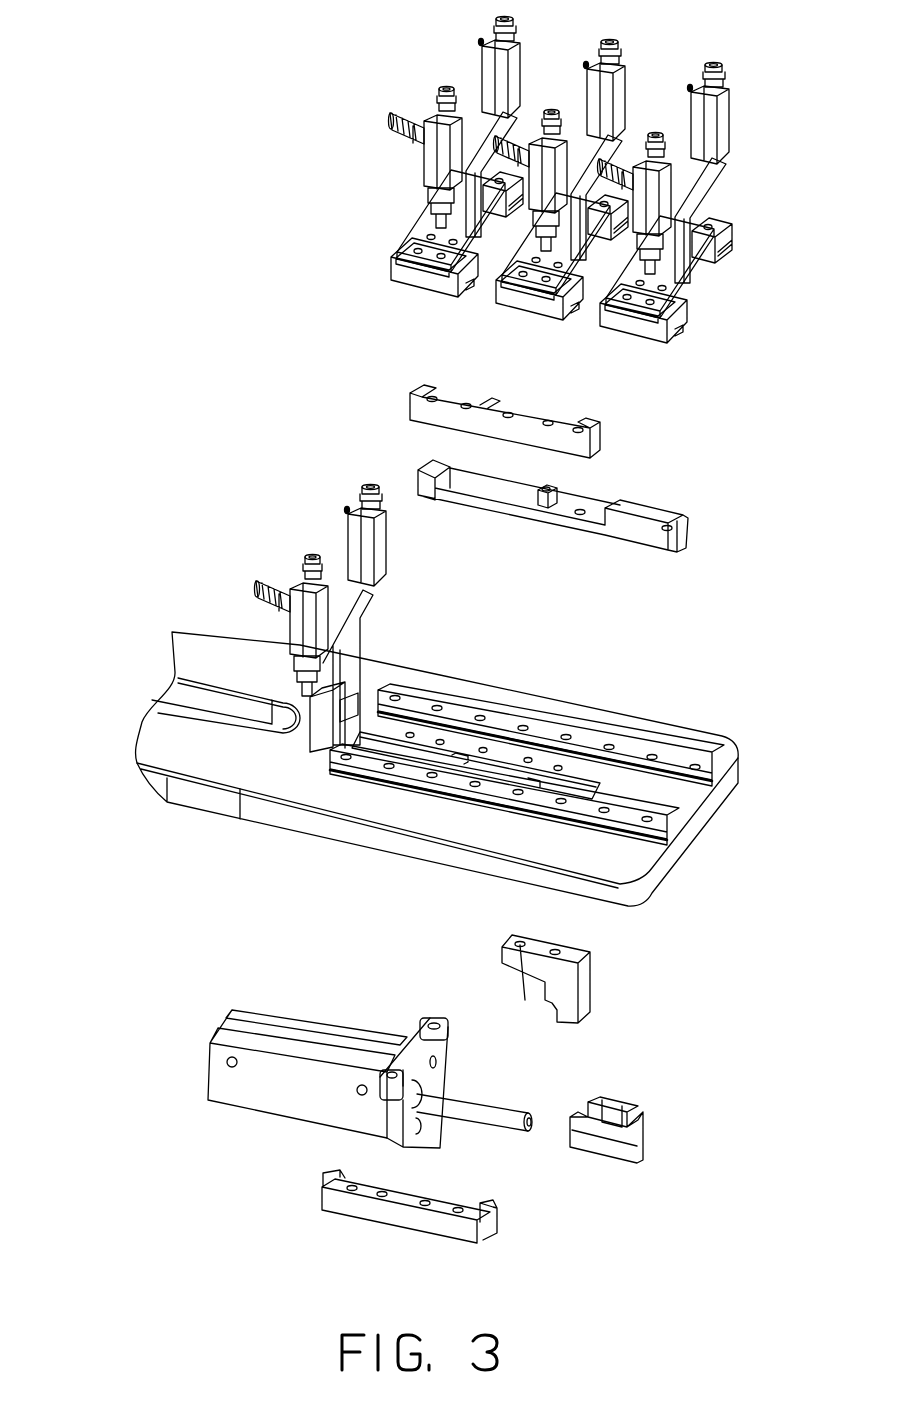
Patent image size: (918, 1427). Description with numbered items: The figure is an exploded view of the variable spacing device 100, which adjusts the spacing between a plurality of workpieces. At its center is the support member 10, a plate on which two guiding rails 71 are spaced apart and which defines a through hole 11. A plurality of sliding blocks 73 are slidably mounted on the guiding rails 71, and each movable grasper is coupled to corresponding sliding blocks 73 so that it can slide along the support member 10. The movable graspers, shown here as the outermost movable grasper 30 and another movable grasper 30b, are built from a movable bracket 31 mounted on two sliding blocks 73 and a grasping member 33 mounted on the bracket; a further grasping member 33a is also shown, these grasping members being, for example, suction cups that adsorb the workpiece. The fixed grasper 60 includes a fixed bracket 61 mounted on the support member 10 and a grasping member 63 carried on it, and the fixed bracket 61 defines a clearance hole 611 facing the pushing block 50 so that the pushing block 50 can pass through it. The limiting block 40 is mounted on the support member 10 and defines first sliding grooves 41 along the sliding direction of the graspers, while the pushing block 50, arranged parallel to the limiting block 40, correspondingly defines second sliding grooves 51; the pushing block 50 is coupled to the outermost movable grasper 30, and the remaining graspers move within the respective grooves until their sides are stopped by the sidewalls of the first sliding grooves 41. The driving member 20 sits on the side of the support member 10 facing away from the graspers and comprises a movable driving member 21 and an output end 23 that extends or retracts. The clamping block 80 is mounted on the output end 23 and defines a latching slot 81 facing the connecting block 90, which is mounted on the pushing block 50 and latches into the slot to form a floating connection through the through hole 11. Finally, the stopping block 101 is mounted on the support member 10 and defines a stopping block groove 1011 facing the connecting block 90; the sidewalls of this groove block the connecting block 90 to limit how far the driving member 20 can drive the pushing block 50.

The variable spacing device 100 is at (193, 78).
The support member 10 is at (459, 735).
The through hole 11 is at (512, 770).
The driving member 20 is at (160, 1110).
The movable driving member 21 is at (255, 1090).
The output end 23 is at (437, 1100).
The movable grasper 30 is at (782, 158).
The movable grasper 30b is at (611, 87).
The movable bracket 31 is at (695, 218).
The grasping member 33 is at (722, 120).
The grasping member 33a is at (438, 176).
The limiting block 40 is at (515, 421).
The first sliding groove 41 is at (438, 404).
The pushing block 50 is at (589, 527).
The second sliding groove 51 is at (487, 494).
The fixed grasper 60 is at (218, 863).
The fixed bracket 61 is at (335, 733).
The clearance hole 611 is at (346, 718).
The grasping member 63 is at (313, 633).
The guiding rail 71 is at (693, 737).
The sliding block 73 is at (398, 270).
The clamping block 80 is at (629, 1133).
The latching slot 81 is at (612, 1107).
The connecting block 90 is at (590, 955).
The stopping block 101 is at (415, 1215).
The stopping block groove 1011 is at (423, 1195).